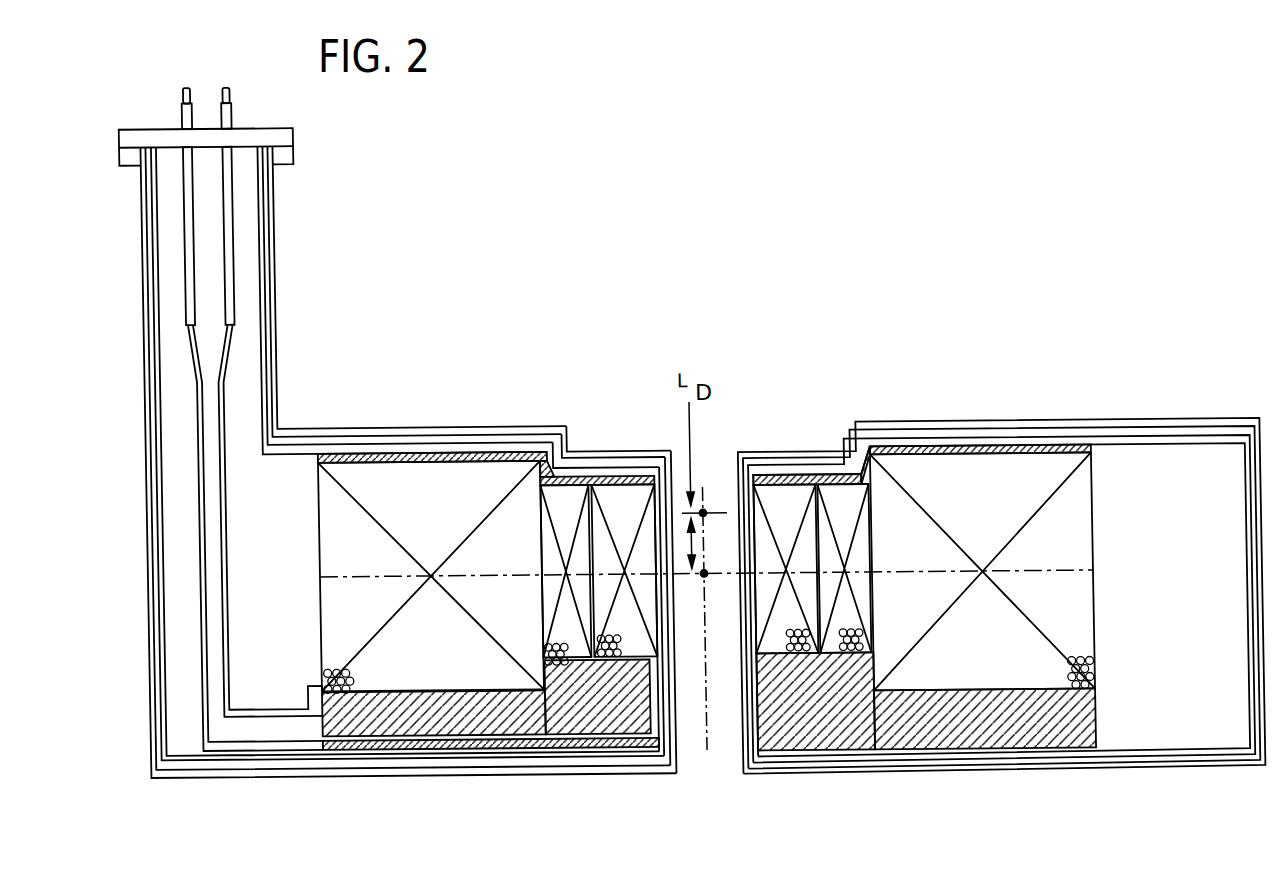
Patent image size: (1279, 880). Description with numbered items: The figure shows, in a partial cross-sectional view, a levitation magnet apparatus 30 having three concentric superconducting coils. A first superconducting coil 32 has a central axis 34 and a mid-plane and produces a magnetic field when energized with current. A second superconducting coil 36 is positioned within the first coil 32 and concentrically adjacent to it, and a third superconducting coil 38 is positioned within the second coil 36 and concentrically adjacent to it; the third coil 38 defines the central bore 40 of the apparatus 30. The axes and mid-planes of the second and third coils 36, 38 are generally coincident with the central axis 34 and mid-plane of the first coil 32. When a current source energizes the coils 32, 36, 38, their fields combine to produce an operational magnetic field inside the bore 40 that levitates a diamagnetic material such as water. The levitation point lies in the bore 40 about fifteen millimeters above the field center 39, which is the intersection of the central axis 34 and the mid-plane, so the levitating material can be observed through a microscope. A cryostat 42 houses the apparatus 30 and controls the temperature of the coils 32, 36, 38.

The apparatus 30 is at (1026, 305).
The first superconducting coil 32 is at (420, 460).
The central axis 34 is at (703, 745).
The second superconducting coil 36 is at (845, 474).
The third superconducting coil 38 is at (788, 474).
The field center 39 is at (704, 575).
The central bore 40 is at (683, 441).
The cryostat 42 is at (609, 447).